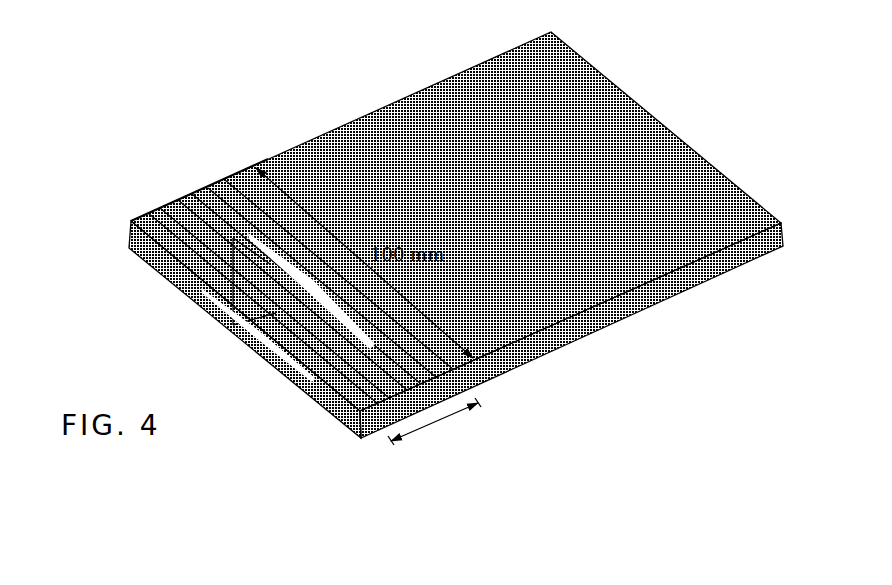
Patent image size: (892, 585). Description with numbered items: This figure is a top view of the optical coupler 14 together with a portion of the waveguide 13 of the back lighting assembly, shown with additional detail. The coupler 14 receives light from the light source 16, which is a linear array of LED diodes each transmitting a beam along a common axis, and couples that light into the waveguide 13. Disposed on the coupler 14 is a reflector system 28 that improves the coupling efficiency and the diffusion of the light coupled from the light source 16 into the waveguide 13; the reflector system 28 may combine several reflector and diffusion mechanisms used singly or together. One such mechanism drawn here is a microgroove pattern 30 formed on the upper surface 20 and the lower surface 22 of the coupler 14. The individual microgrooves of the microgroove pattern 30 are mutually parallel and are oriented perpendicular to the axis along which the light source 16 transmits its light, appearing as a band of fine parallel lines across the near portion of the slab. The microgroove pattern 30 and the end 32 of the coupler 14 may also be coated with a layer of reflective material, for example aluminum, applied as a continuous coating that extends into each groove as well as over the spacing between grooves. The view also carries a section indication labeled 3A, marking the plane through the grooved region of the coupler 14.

The waveguide 13 is at (650, 103).
The optical coupler 14 is at (173, 165).
The light source 16 is at (150, 273).
The upper surface 20 is at (177, 228).
The lower surface 22 is at (348, 433).
The reflector system 28 is at (235, 415).
The microgroove pattern 30 is at (200, 197).
The end of the coupler 32 is at (405, 403).
The section line 3A is at (157, 197).